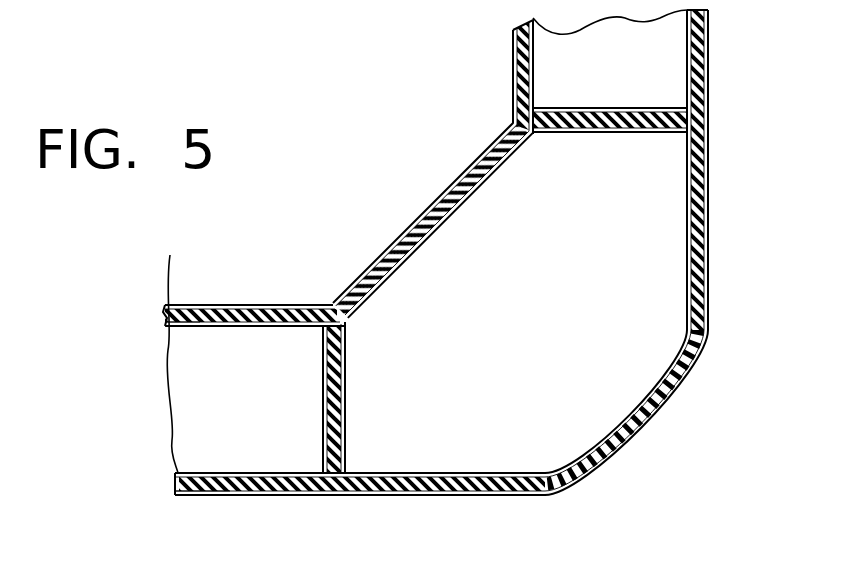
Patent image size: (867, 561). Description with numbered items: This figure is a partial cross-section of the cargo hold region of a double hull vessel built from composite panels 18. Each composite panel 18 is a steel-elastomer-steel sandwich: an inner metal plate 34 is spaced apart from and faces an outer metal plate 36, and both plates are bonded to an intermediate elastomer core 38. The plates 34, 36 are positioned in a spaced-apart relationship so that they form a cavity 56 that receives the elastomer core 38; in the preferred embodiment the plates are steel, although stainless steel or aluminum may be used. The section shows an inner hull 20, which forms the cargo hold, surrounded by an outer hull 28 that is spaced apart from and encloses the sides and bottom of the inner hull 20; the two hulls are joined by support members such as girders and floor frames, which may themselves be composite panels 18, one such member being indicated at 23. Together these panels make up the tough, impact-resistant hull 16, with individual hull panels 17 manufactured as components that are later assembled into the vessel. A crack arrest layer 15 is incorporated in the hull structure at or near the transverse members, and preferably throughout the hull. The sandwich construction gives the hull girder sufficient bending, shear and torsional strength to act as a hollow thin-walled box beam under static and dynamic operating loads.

The crack arrest layer 15 is at (308, 305).
The hull 16 is at (712, 222).
The hull panels 17 is at (710, 66).
The composite panels 18 is at (708, 337).
The inner hull 20 is at (468, 168).
The cross member 23 is at (624, 134).
The outer hull 28 is at (512, 495).
The inner metal plate 34 is at (174, 305).
The outer metal plate 36 is at (170, 328).
The elastomer core 38 is at (165, 315).
The cavity 56 is at (470, 473).